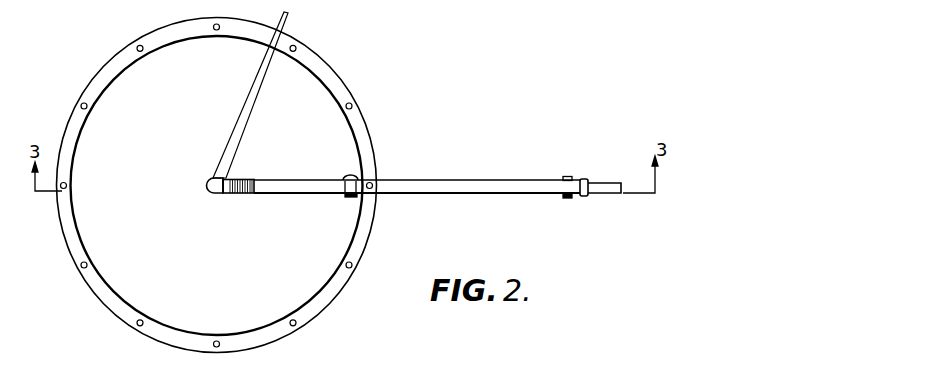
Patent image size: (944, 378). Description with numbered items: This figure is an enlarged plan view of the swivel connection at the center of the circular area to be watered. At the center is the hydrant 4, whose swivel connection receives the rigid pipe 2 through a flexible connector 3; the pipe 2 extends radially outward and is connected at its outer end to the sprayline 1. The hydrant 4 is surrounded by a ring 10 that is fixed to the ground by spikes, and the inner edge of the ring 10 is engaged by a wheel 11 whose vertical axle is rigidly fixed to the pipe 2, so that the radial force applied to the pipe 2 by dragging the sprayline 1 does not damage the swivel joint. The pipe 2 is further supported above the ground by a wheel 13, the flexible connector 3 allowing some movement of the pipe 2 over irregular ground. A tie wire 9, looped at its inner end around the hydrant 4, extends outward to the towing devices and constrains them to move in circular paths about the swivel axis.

The sprayline 1 is at (607, 194).
The rigid pipe 2 is at (300, 194).
The flexible connector 3 is at (238, 195).
The hydrant 4 is at (207, 195).
The tie wire 9 is at (256, 85).
The ring 10 is at (183, 42).
The wheel 11 is at (346, 177).
The wheel 13 is at (566, 176).